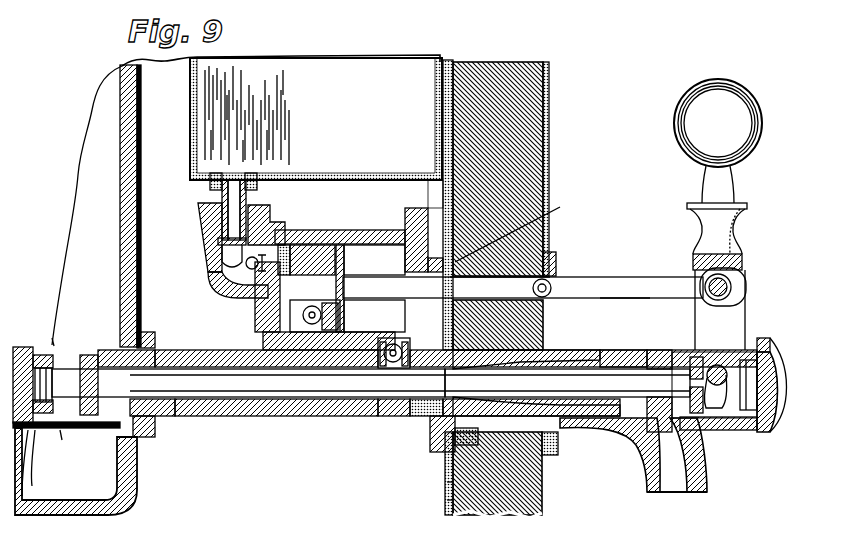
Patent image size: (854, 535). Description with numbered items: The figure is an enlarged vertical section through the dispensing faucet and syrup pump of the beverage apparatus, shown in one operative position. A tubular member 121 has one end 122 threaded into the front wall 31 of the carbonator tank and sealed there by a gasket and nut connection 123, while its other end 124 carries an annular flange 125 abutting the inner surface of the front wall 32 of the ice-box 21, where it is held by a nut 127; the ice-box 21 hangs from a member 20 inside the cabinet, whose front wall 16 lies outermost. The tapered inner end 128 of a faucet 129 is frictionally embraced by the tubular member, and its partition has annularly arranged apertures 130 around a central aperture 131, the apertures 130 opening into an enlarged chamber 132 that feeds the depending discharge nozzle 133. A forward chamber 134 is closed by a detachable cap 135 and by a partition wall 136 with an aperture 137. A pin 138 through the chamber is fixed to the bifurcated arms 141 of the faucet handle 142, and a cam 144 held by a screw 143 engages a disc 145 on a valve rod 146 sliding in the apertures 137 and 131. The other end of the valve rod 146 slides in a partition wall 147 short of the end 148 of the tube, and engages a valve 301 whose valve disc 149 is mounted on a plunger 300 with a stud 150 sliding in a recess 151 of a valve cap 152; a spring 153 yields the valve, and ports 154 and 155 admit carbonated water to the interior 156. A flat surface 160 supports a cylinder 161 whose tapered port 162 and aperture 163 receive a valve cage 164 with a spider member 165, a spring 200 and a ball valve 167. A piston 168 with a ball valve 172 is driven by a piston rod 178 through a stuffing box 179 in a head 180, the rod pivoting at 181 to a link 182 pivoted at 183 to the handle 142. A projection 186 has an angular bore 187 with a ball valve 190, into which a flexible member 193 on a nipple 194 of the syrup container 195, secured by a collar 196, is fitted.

The front wall 16 is at (549, 114).
The member 20 is at (30, 518).
The ice-box 21 is at (447, 506).
The front wall of carbonator tank 31 is at (160, 283).
The front wall of ice-box 32 is at (445, 488).
The tubular member 121 is at (330, 418).
The end of tubular member 122 is at (172, 418).
The gasket and nut connection 123 is at (150, 437).
The end of tubular member 124 is at (442, 438).
The annular flange 125 is at (458, 440).
The nut 127 is at (447, 470).
The tapered inner end 128 is at (562, 470).
The faucet 129 is at (730, 432).
The annularly arranged apertures 130 is at (585, 350).
The central aperture 131 is at (460, 380).
The enlarged chamber 132 is at (622, 350).
The discharge nozzle 133 is at (675, 485).
The chamber 134 is at (696, 432).
The detachable cap 135 is at (768, 338).
The partition wall 136 is at (665, 352).
The aperture 137 is at (714, 307).
The pin 138 is at (776, 368).
The bifurcated arms 141 is at (748, 290).
The faucet handle 142 is at (740, 172).
The screw 143 is at (782, 405).
The cam 144 is at (747, 422).
The disc 145 is at (742, 435).
The valve rod 146 is at (620, 400).
The partition wall 147 is at (166, 349).
The end of tubular member 148 is at (93, 428).
The valve disc 149 is at (82, 424).
The stud 150 is at (40, 450).
The recess 151 is at (35, 345).
The valve cap 152 is at (50, 345).
The spring 153 is at (23, 480).
The ports 154 is at (58, 456).
The ports 155 is at (150, 392).
The interior of tubular member 156 is at (228, 365).
The flat surface 160 is at (298, 418).
The cylinder 161 is at (378, 233).
The tapered port 162 is at (345, 334).
The aperture 163 is at (386, 368).
The valve cage 164 is at (400, 406).
The spider member 165 is at (385, 405).
The ball valve 167 is at (390, 312).
The piston 168 is at (316, 250).
The ball valve 172 is at (262, 315).
The piston rod 178 is at (500, 280).
The stuffing box 179 is at (572, 204).
The head 180 is at (422, 208).
The pivotal connection 181 is at (552, 288).
The link 182 is at (625, 290).
The pivotal connection 183 is at (712, 283).
The projection 186 is at (198, 208).
The angular bore 187 is at (218, 262).
The ball valve 190 is at (212, 292).
The flexible member 193 is at (218, 206).
The nipple 194 is at (210, 190).
The syrup container 195 is at (320, 70).
The collar 196 is at (298, 154).
The spring 200 is at (500, 278).
The plunger 300 is at (100, 347).
The valve 301 is at (62, 356).